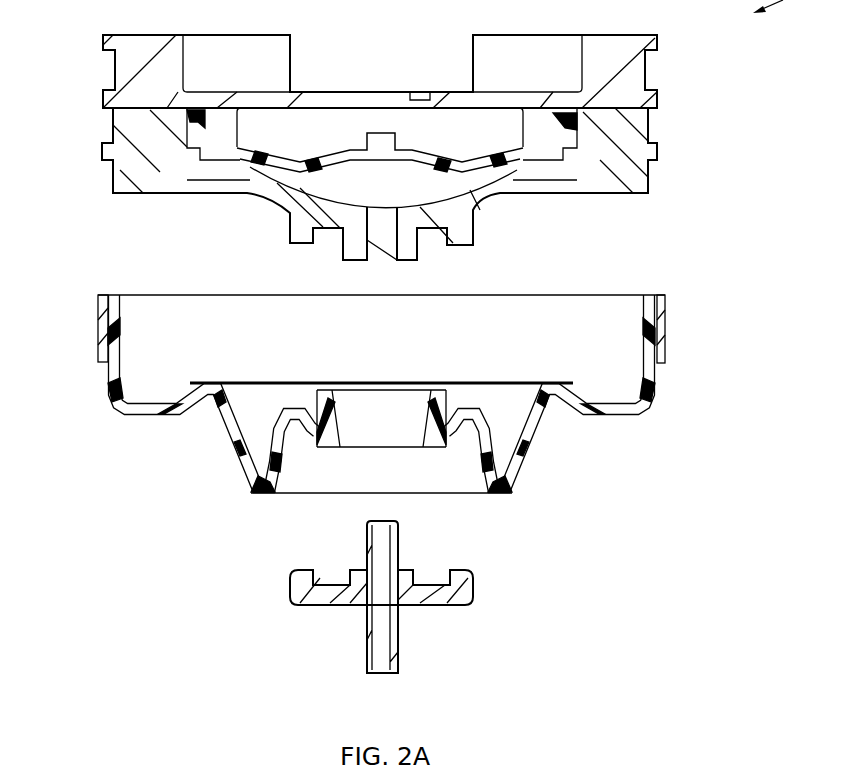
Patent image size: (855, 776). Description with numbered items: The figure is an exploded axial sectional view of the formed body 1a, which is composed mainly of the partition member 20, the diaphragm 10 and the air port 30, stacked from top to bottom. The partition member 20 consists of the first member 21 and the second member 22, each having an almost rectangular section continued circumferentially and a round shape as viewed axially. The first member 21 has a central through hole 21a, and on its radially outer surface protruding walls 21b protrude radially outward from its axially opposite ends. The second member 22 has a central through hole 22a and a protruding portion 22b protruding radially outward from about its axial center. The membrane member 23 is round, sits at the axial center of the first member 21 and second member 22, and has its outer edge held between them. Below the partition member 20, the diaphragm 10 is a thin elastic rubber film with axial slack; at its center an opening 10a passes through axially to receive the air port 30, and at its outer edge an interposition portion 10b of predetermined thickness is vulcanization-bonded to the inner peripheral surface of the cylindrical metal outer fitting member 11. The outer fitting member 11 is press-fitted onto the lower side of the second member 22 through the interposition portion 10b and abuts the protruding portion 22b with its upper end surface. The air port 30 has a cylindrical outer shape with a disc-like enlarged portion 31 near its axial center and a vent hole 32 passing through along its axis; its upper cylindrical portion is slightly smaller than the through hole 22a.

The formed body 1a is at (737, 723).
The diaphragm 10 is at (352, 400).
The opening 10a is at (423, 393).
The interposition portion 10b is at (647, 317).
The outer fitting member 11 is at (98, 325).
The partition member 20 is at (402, 142).
The first member 21 is at (444, 66).
The through hole 21a is at (420, 92).
The protruding walls 21b is at (657, 45).
The second member 22 is at (434, 184).
The through hole 22a is at (387, 240).
The protruding portion 22b is at (655, 153).
The membrane member 23 is at (337, 152).
The air port 30 is at (412, 631).
The enlarged portion 31 is at (463, 592).
The vent hole 32 is at (380, 667).